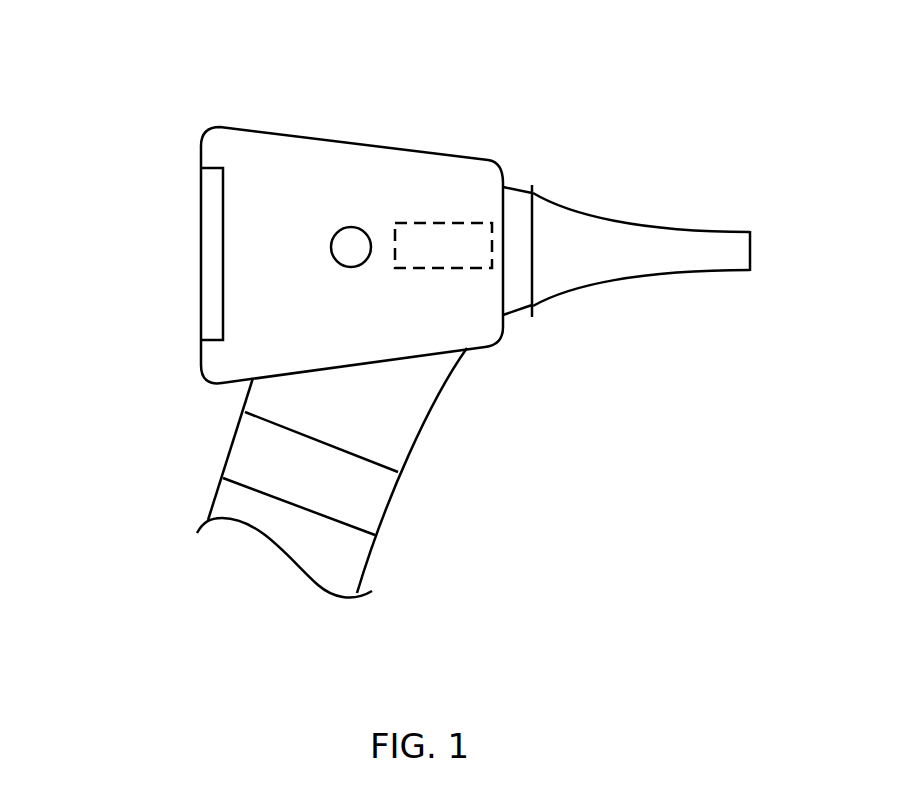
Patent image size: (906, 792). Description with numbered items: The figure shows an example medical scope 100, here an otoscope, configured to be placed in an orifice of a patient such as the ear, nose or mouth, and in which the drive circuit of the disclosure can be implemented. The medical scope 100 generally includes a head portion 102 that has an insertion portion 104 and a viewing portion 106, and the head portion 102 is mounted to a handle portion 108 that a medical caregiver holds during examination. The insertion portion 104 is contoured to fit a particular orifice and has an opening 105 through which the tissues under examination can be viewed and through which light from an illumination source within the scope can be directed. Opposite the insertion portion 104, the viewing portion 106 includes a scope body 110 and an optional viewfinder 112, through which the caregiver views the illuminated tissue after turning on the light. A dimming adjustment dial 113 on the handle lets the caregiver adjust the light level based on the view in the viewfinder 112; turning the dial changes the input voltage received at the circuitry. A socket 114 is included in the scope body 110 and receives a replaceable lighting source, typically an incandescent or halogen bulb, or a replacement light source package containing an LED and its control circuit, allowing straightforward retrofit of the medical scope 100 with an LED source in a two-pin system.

The medical scope 100 is at (106, 640).
The head portion 102 is at (290, 63).
The insertion portion 104 is at (625, 222).
The opening 105 is at (787, 246).
The viewing portion 106 is at (293, 138).
The handle portion 108 is at (355, 562).
The scope body 110 is at (375, 192).
The viewfinder 112 is at (208, 225).
The dimming adjustment dial 113 is at (331, 483).
The socket 114 is at (427, 268).